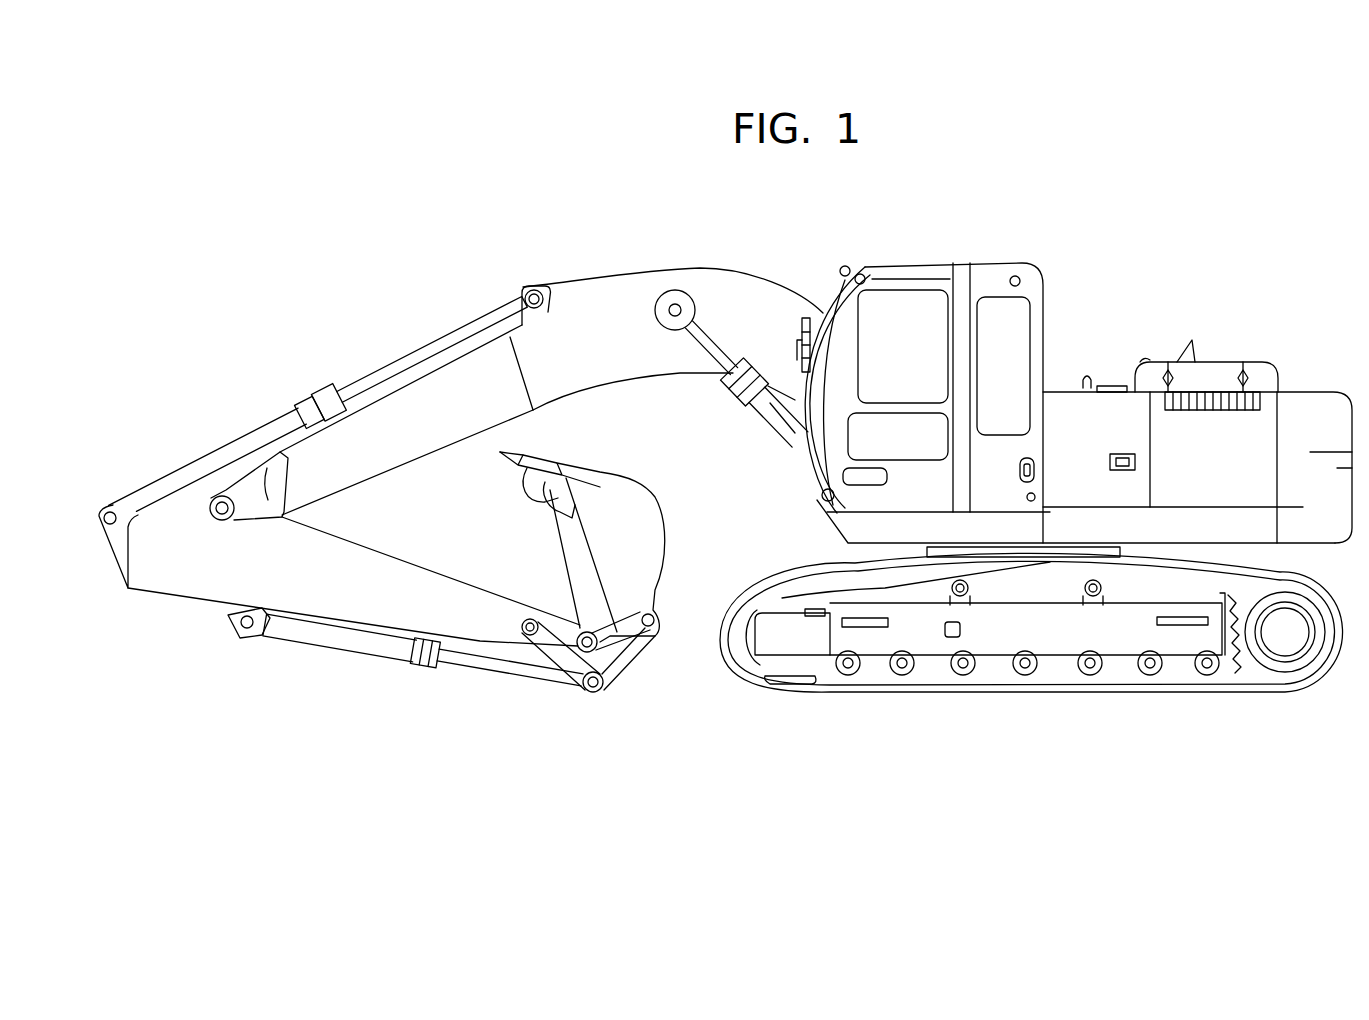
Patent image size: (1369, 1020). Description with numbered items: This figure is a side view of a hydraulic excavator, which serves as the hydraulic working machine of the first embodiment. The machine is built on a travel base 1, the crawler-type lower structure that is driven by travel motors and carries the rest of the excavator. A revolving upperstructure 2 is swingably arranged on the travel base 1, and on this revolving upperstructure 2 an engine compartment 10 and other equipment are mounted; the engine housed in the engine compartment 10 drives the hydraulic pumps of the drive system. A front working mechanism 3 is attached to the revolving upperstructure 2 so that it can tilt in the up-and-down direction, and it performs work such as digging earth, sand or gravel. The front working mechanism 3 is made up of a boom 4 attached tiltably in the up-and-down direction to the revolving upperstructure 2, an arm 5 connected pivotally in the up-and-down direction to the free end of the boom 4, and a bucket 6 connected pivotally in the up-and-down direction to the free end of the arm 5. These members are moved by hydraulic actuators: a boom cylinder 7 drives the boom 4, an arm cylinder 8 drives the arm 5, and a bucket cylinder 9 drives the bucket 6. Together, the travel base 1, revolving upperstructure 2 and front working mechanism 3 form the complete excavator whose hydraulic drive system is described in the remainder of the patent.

The travel base 1 is at (1022, 693).
The revolving upperstructure 2 is at (1107, 382).
The front working mechanism 3 is at (714, 268).
The boom 4 is at (628, 277).
The arm 5 is at (302, 618).
The bucket 6 is at (662, 522).
The boom cylinder 7 is at (763, 400).
The arm cylinder 8 is at (393, 360).
The bucket cylinder 9 is at (375, 652).
The engine compartment 10 is at (1217, 360).